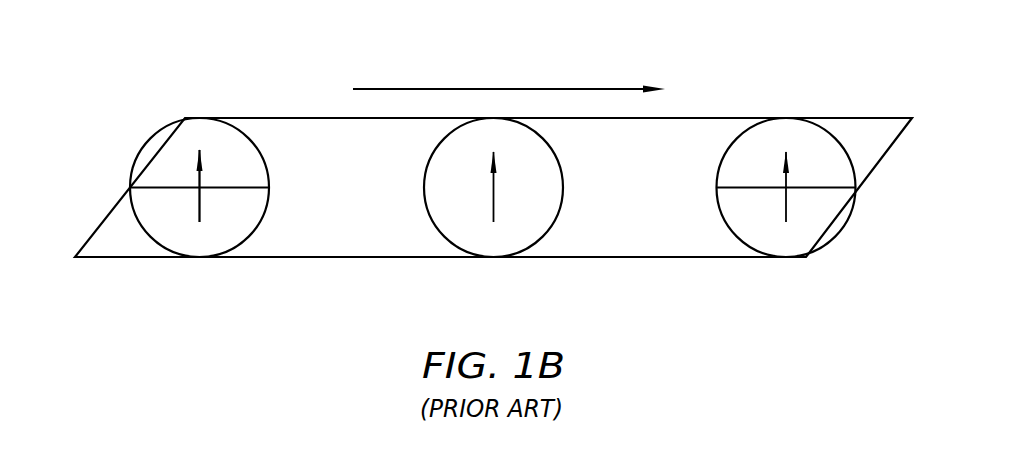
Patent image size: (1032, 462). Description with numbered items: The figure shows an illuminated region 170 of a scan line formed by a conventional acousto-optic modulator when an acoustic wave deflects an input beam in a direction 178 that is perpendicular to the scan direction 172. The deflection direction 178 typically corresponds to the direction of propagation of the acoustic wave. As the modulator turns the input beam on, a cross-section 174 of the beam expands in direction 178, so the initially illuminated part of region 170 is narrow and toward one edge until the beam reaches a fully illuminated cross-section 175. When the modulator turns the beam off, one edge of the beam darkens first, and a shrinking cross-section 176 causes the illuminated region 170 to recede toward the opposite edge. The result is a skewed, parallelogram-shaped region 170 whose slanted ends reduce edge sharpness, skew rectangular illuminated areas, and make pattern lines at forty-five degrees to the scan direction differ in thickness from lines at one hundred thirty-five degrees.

The illuminated region 170 is at (270, 118).
The scan direction 172 is at (447, 88).
The cross-section 174 is at (265, 160).
The cross-section 175 is at (560, 162).
The cross-section 176 is at (845, 230).
The direction 178 is at (202, 198).